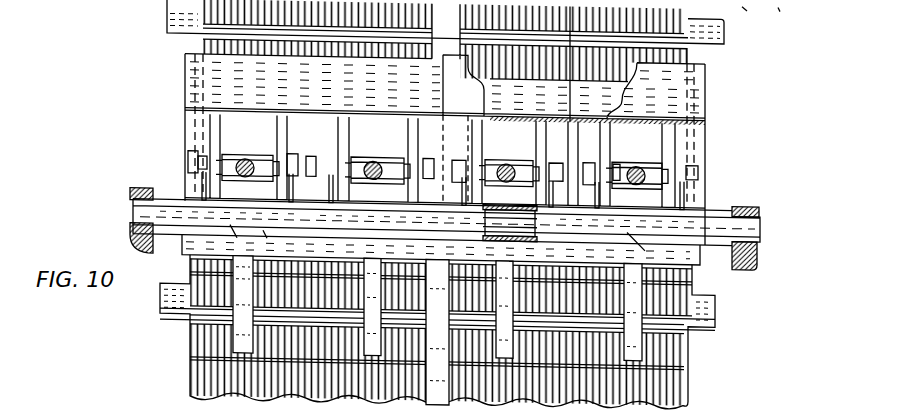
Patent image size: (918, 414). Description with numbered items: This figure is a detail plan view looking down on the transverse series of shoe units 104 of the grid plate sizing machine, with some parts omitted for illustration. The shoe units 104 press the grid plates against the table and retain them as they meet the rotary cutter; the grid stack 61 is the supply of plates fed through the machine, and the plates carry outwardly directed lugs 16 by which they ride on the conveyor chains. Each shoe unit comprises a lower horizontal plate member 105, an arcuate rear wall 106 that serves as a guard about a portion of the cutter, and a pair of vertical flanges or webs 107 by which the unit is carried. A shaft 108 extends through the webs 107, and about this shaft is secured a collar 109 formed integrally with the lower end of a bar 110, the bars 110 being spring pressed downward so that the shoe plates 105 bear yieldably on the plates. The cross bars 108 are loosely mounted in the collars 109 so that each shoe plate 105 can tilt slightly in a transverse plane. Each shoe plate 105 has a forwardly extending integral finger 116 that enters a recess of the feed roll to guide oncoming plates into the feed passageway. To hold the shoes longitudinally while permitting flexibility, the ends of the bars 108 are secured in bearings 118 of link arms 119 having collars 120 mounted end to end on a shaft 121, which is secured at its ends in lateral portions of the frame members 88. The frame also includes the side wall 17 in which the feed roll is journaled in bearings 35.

The outwardly directed lugs 16 is at (180, 8).
The side wall 17 is at (753, 6).
The bearings 35 is at (788, 6).
The grid stack 61 is at (200, 38).
The frame members 88 is at (133, 233).
The shoe units 104 is at (187, 84).
The lower horizontal plate member 105 is at (704, 149).
The arcuate rear wall 106 is at (700, 78).
The vertical flanges or webs 107 is at (287, 121).
The shaft 108 is at (196, 159).
The collar 109 is at (228, 148).
The bar 110 is at (247, 170).
The forwardly extending integral finger 116 is at (457, 316).
The bearings 118 is at (190, 146).
The link arms 119 is at (202, 181).
The collars 120 is at (325, 214).
The shaft 121 is at (749, 212).